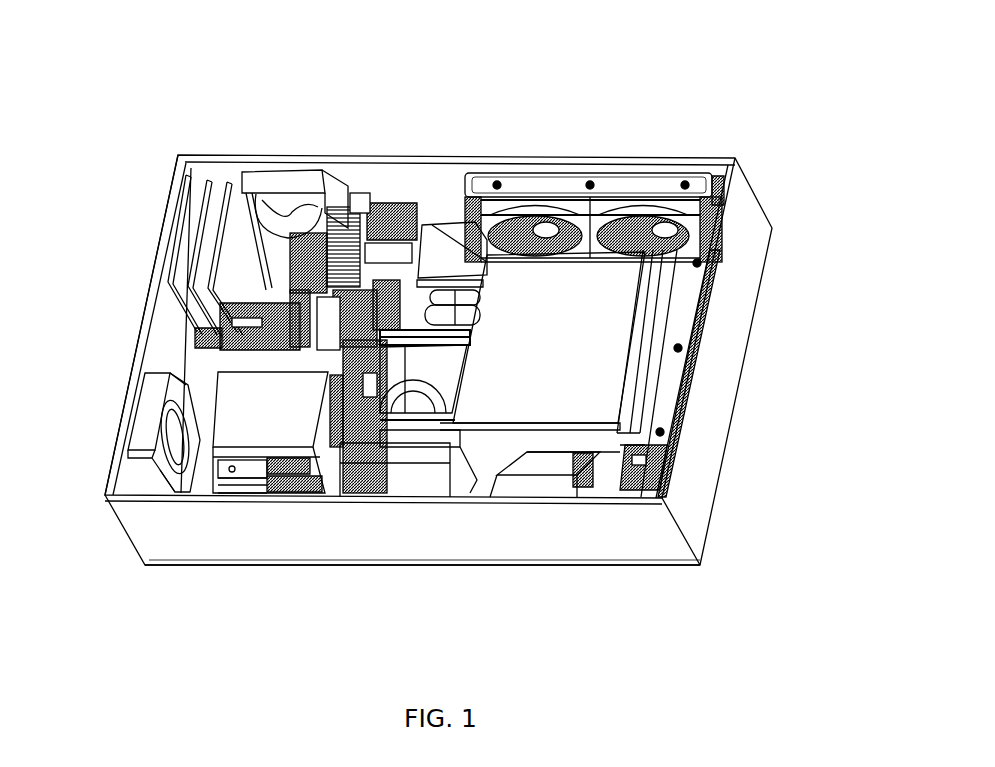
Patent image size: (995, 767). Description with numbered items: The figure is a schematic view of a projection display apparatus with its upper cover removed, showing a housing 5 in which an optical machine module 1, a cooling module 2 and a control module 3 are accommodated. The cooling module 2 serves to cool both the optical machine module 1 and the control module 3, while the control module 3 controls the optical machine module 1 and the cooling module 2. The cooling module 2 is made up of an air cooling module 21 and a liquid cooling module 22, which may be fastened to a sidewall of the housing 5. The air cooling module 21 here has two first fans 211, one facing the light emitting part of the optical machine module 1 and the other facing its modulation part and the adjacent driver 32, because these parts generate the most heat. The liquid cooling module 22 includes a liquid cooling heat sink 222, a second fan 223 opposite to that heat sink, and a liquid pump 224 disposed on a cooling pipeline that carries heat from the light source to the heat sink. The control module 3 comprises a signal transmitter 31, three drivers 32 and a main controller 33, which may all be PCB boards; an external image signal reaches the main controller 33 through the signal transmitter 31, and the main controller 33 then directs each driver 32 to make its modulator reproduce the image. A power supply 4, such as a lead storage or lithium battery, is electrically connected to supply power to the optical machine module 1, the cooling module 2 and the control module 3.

The optical machine module 1 is at (253, 417).
The cooling module 2 is at (538, 62).
The air cooling module 21 is at (366, 98).
The liquid cooling module 22 is at (649, 282).
The first fan 211 is at (150, 418).
The liquid cooling heat sink 222 is at (607, 185).
The second fan 223 is at (720, 208).
The liquid pump 224 is at (545, 485).
The control module 3 is at (815, 418).
The signal transmitter 31 is at (605, 382).
The driver 32 is at (223, 240).
The main controller 33 is at (670, 463).
The power supply 4 is at (605, 448).
The housing 5 is at (286, 566).